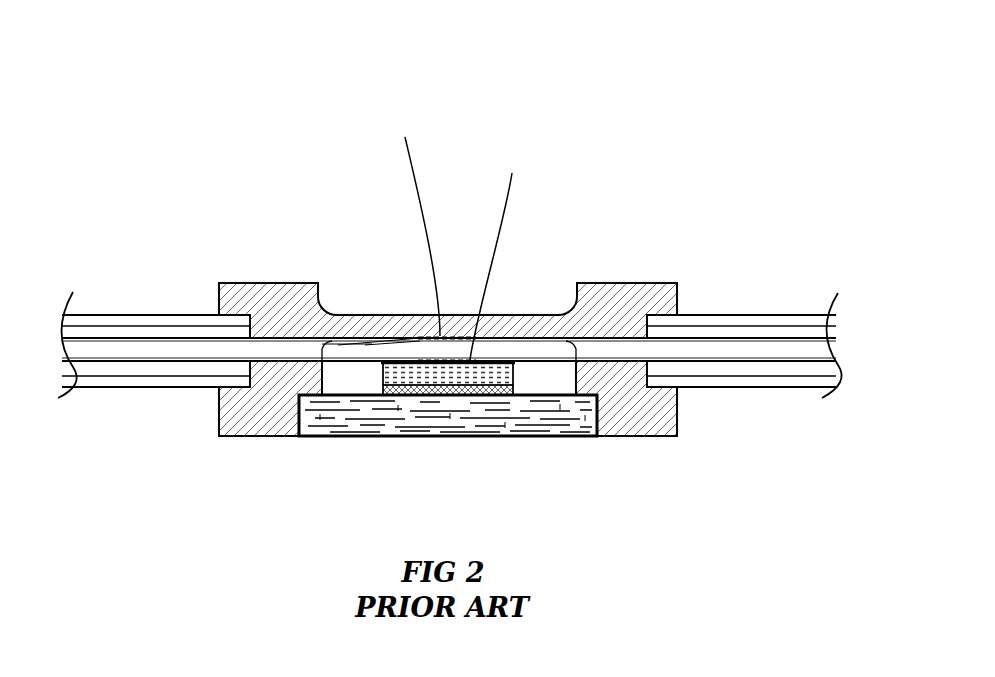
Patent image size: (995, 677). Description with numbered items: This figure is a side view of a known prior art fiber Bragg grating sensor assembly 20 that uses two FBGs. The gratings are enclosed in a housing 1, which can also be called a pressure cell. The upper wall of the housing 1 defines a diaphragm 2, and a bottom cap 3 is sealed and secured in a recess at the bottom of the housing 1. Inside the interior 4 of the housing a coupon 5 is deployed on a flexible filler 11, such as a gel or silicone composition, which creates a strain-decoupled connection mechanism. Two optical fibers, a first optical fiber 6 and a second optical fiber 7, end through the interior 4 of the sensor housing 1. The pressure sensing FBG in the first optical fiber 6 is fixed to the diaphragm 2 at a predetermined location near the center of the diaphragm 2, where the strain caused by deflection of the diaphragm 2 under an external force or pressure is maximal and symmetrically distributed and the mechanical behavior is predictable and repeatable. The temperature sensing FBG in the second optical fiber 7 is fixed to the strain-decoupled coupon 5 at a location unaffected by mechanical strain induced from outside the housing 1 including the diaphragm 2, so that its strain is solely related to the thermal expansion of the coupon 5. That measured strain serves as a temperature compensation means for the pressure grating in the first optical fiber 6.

The housing 1 is at (624, 297).
The diaphragm 2 is at (400, 327).
The bottom cap 3 is at (362, 415).
The interior 4 is at (533, 377).
The coupon 5 is at (442, 372).
The first optical fiber 6 is at (362, 342).
The second optical fiber 7 is at (518, 360).
The flexible filler 11 is at (484, 386).
The fiber optic sensor 20 is at (230, 112).